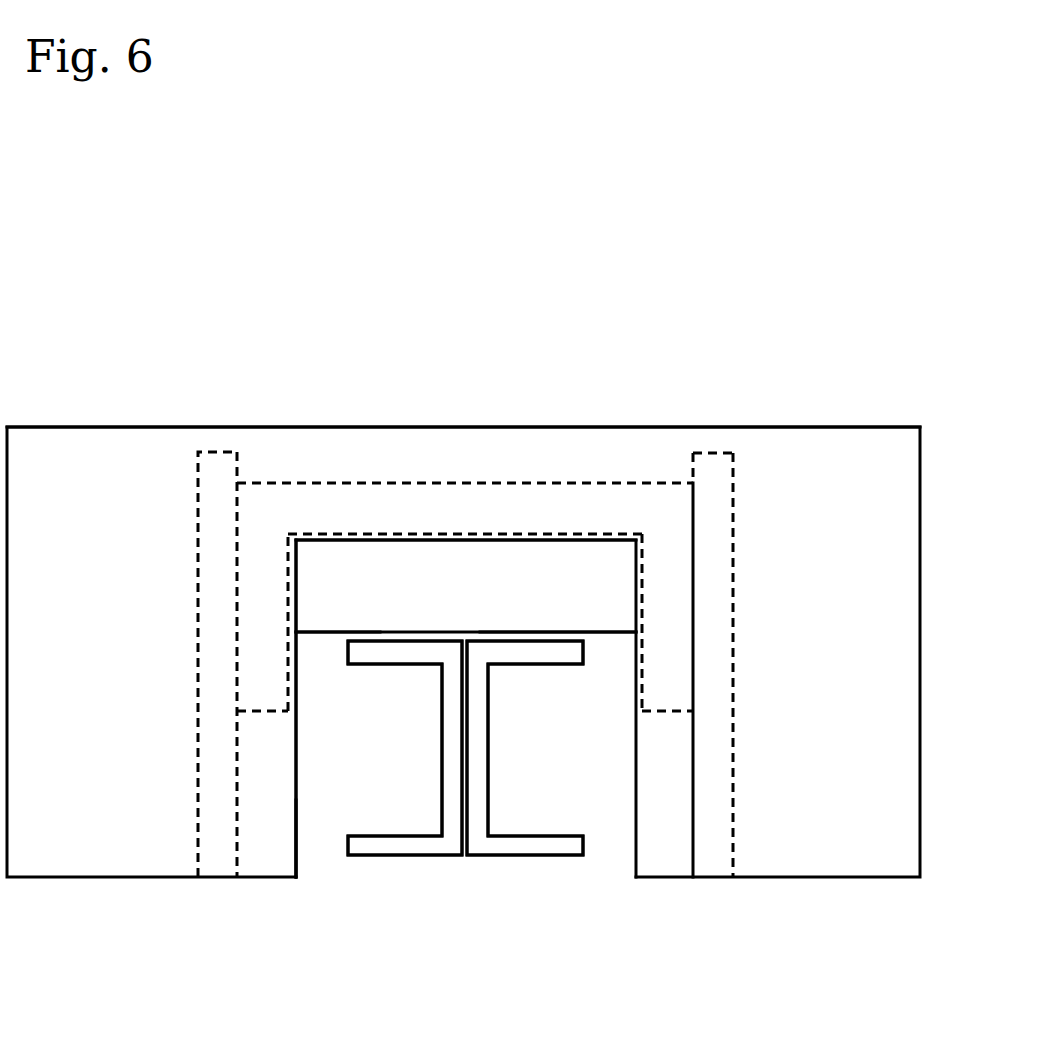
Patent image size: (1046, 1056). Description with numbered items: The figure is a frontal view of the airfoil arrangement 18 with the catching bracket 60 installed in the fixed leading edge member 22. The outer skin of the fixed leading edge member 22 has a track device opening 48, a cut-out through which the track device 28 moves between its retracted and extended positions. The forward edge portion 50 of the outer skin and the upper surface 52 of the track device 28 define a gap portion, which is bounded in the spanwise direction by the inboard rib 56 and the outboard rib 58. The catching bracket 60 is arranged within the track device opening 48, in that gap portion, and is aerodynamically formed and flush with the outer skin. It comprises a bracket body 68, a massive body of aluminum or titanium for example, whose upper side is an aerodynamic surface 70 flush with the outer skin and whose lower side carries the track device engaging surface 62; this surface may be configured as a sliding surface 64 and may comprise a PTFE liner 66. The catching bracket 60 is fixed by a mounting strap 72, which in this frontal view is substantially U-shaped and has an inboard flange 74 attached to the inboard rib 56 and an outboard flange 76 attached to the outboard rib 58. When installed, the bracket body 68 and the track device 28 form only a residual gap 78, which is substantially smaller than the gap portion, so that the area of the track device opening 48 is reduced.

The airfoil arrangement 18 is at (108, 305).
The fixed leading edge member 22 is at (187, 414).
The track device 28 is at (477, 902).
The track device opening 48 is at (322, 904).
The forward edge portion 50 is at (525, 545).
The upper surface 52 is at (528, 648).
The inboard rib 56 is at (210, 568).
The outboard rib 58 is at (720, 578).
The catching bracket 60 is at (325, 620).
The track device engaging surface 62 is at (383, 637).
The sliding surface 64 is at (345, 645).
The PTFE liner 66 is at (420, 632).
The bracket body 68 is at (590, 563).
The aerodynamic surface 70 is at (482, 552).
The mounting strap 72 is at (330, 496).
The inboard flange 74 is at (258, 640).
The outboard flange 76 is at (670, 655).
The residual gap 78 is at (503, 638).